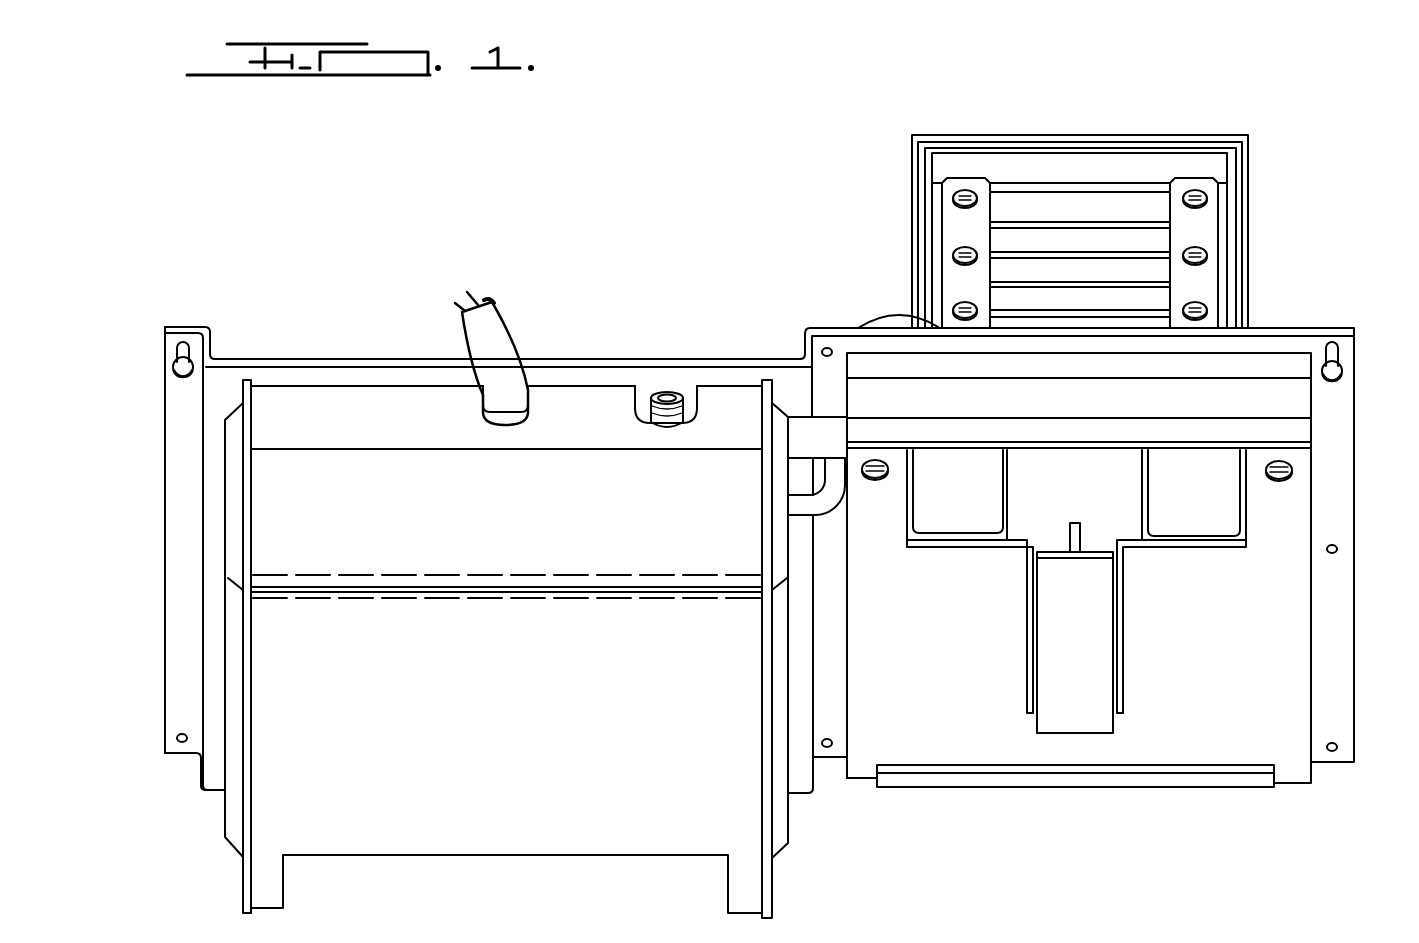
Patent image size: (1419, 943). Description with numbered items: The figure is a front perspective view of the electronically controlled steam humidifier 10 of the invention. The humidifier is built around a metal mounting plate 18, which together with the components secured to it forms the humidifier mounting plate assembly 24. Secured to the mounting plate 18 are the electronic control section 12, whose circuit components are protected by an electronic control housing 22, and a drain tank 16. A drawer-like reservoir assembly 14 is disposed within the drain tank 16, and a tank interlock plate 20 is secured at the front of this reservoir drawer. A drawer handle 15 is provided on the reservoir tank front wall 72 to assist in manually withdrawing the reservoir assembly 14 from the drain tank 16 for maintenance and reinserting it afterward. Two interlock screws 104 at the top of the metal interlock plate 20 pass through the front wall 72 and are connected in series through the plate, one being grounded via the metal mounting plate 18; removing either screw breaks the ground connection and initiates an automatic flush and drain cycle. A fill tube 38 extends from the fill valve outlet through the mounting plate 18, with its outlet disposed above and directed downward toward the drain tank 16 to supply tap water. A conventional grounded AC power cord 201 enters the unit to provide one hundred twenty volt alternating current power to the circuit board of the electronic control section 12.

The electronically controlled steam humidifier 10 is at (138, 342).
The electronic control section 12 is at (800, 829).
The reservoir assembly 14 is at (1250, 166).
The drawer handle 15 is at (1057, 643).
The drain tank 16 is at (1092, 130).
The mounting plate 18 is at (695, 359).
The tank interlock plate 20 is at (1270, 597).
The electronic control housing 22 is at (290, 810).
The humidifier mounting plate assembly 24 is at (1362, 332).
The fill tube 38 is at (885, 318).
The reservoir tank front wall 72 is at (1128, 516).
The interlock screws 104 is at (877, 480).
The AC power cord 201 is at (527, 322).